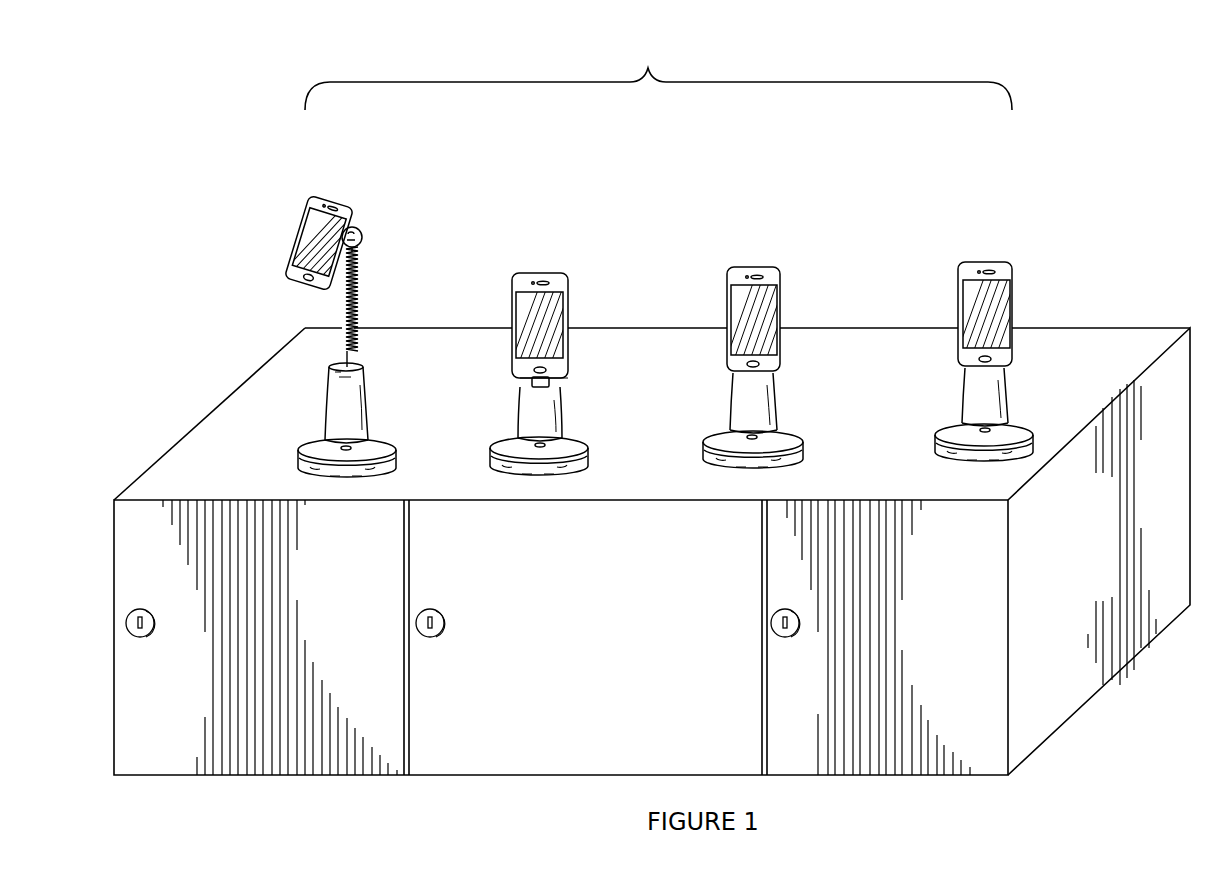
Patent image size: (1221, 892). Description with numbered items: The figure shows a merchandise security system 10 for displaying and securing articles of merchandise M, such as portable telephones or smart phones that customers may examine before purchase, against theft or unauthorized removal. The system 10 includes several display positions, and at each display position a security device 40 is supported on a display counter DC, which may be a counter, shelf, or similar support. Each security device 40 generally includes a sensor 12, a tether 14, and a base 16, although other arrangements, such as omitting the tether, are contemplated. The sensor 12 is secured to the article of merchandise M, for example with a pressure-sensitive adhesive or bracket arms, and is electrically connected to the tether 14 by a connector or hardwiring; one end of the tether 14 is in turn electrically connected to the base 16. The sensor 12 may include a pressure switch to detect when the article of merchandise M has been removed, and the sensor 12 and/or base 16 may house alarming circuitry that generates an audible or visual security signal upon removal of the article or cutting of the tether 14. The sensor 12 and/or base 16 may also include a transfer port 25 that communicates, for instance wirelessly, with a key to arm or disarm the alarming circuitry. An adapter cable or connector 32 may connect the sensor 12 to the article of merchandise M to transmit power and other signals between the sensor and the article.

The merchandise security system 10 is at (658, 75).
The sensor 12 is at (360, 228).
The tether 14 is at (358, 314).
The base 16 is at (325, 425).
The transfer port 25 is at (544, 438).
The adapter cable 32 is at (549, 377).
The security device 40 is at (398, 469).
The article of merchandise M is at (295, 231).
The display counter DC is at (1116, 370).